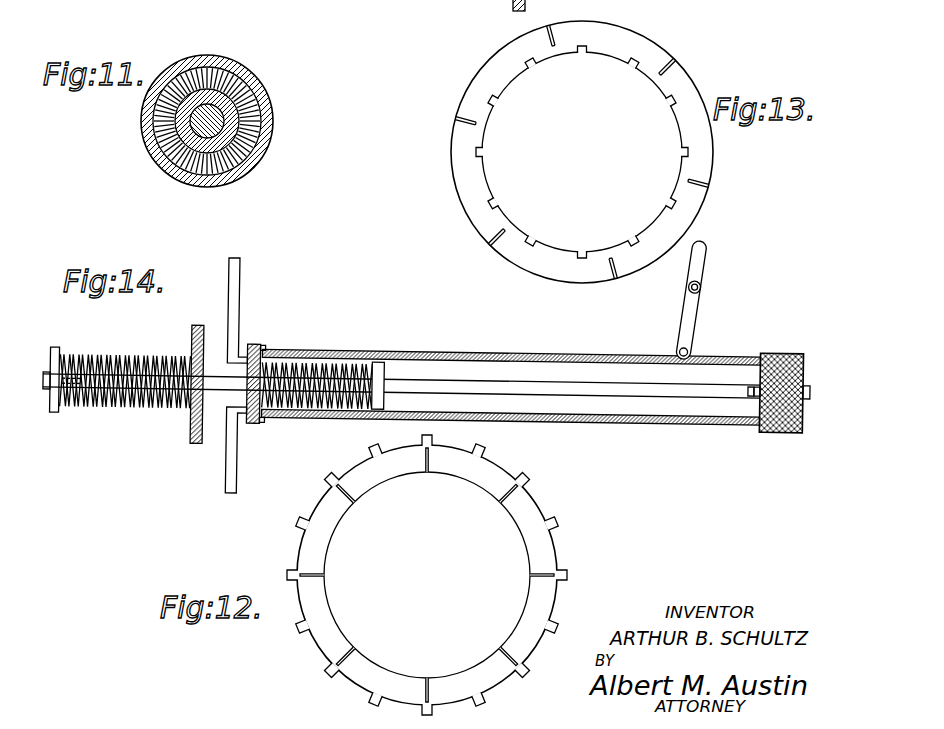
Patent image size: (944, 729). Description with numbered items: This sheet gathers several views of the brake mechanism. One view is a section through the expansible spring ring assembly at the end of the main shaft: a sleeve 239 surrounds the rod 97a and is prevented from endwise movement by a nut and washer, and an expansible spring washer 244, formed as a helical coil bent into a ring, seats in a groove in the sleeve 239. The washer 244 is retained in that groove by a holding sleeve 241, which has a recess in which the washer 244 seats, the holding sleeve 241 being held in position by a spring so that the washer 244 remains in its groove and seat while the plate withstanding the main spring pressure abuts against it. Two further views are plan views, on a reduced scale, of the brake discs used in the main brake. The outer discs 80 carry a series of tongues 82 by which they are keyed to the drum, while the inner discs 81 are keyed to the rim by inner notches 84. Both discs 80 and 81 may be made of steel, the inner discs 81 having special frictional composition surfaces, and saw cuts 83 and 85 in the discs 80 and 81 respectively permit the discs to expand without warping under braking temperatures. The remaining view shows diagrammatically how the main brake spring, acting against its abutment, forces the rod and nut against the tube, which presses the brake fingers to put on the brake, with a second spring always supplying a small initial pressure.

In FIG. 11, the holding sleeve 241 is at (247, 78).
In FIG. 11, the sleeve 239 is at (170, 157).
In FIG. 11, the expansible spring washer 244 is at (247, 130).
In FIG. 11, the rod 97a is at (218, 117).
In FIG. 13, the inner brake disc 81 is at (705, 157).
In FIG. 13, the inner notches 84 is at (533, 66).
In FIG. 13, the saw cuts 85 is at (658, 72).
In FIG. 12, the outer brake disc 80 is at (543, 597).
In FIG. 12, the tongues 82 is at (295, 570).
In FIG. 12, the saw cuts 83 is at (350, 496).